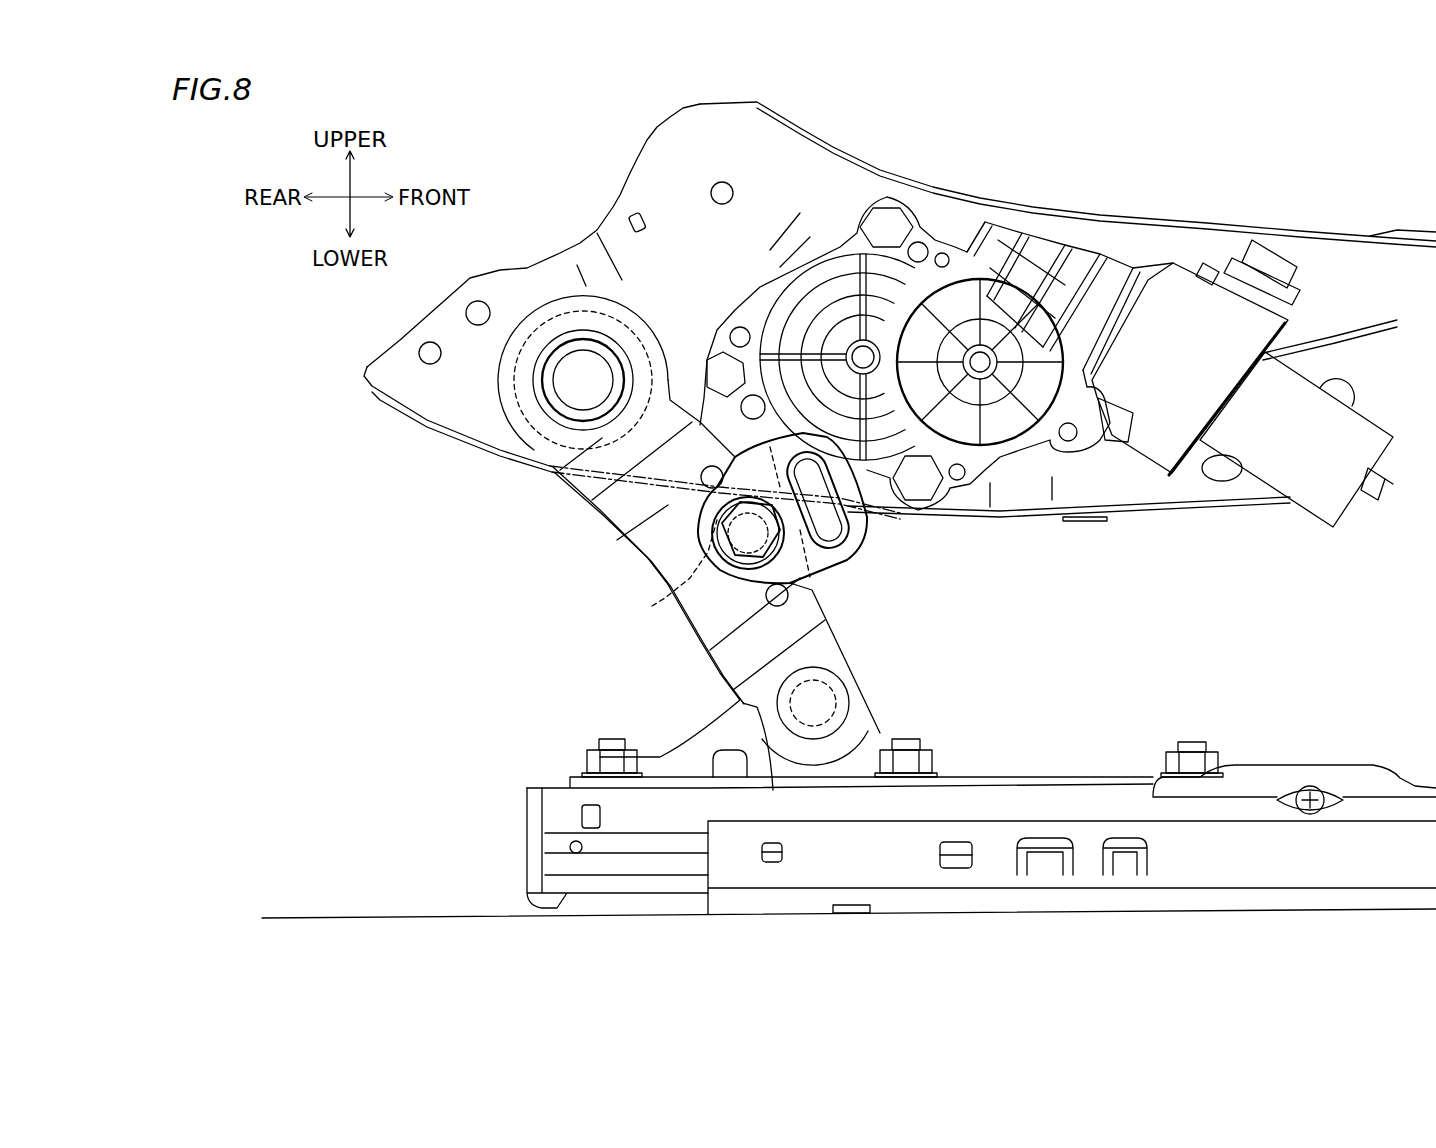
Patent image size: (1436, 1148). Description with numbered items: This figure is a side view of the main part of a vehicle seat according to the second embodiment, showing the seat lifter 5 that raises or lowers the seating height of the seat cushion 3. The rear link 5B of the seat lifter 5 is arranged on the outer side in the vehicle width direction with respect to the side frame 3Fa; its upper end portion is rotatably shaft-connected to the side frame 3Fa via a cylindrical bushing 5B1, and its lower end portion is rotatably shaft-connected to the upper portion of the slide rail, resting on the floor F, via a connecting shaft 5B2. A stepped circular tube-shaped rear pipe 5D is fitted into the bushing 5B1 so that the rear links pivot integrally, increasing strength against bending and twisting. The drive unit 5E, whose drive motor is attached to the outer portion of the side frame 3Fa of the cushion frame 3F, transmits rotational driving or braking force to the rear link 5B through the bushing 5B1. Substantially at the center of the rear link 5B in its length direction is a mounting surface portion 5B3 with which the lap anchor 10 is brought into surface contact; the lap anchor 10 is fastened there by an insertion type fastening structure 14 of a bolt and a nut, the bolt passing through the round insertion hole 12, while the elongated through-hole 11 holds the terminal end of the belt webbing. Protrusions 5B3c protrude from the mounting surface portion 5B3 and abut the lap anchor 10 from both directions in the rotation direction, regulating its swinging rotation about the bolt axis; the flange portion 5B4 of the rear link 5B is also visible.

The seat cushion 3 is at (1068, 309).
The side frame 3F is at (1260, 220).
The side frame 3Fa is at (1213, 223).
The seat lifter 5 is at (878, 461).
The rear link 5B is at (515, 441).
The bushing 5B1 is at (553, 338).
The connecting shaft 5B2 is at (813, 705).
The mounting surface portion 5B3 is at (660, 520).
The protrusions 5B3c is at (663, 512).
The flange portion 5B4 is at (595, 462).
The rear pipe 5D is at (570, 320).
The drive unit 5E is at (1172, 300).
The lap anchor 10 is at (752, 460).
The through-hole 11 is at (835, 530).
The insertion hole 12 is at (652, 606).
The fastening structure 14 is at (752, 527).
The floor F is at (340, 916).